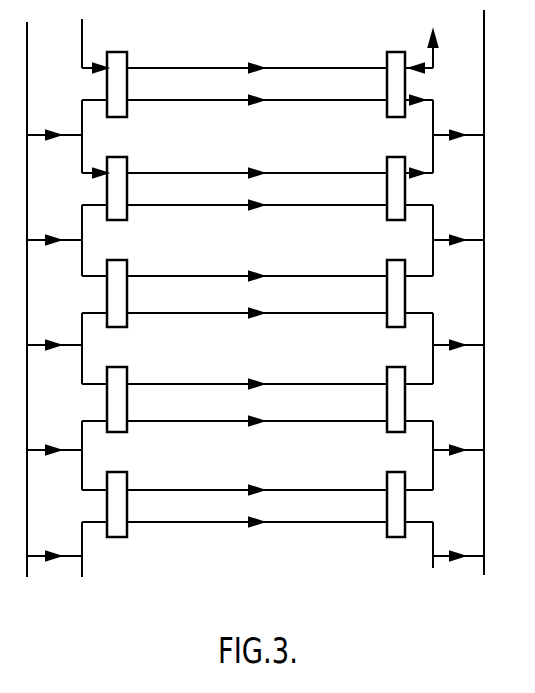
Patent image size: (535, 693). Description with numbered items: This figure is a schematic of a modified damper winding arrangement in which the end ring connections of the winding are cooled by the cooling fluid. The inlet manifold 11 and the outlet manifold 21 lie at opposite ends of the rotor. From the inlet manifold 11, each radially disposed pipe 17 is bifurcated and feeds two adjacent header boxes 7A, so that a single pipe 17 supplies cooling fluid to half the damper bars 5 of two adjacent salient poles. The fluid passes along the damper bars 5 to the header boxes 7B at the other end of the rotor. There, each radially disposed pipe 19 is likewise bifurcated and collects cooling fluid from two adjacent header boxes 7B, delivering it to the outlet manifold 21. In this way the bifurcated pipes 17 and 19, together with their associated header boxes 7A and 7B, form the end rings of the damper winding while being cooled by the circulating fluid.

The inlet manifold 11 is at (27, 298).
The radially disposed pipe 17 is at (66, 243).
The header box 7A is at (118, 208).
The damper bar 5 is at (202, 207).
The header box 7B is at (398, 113).
The radially disposed pipe 19 is at (477, 138).
The outlet manifold 21 is at (485, 253).